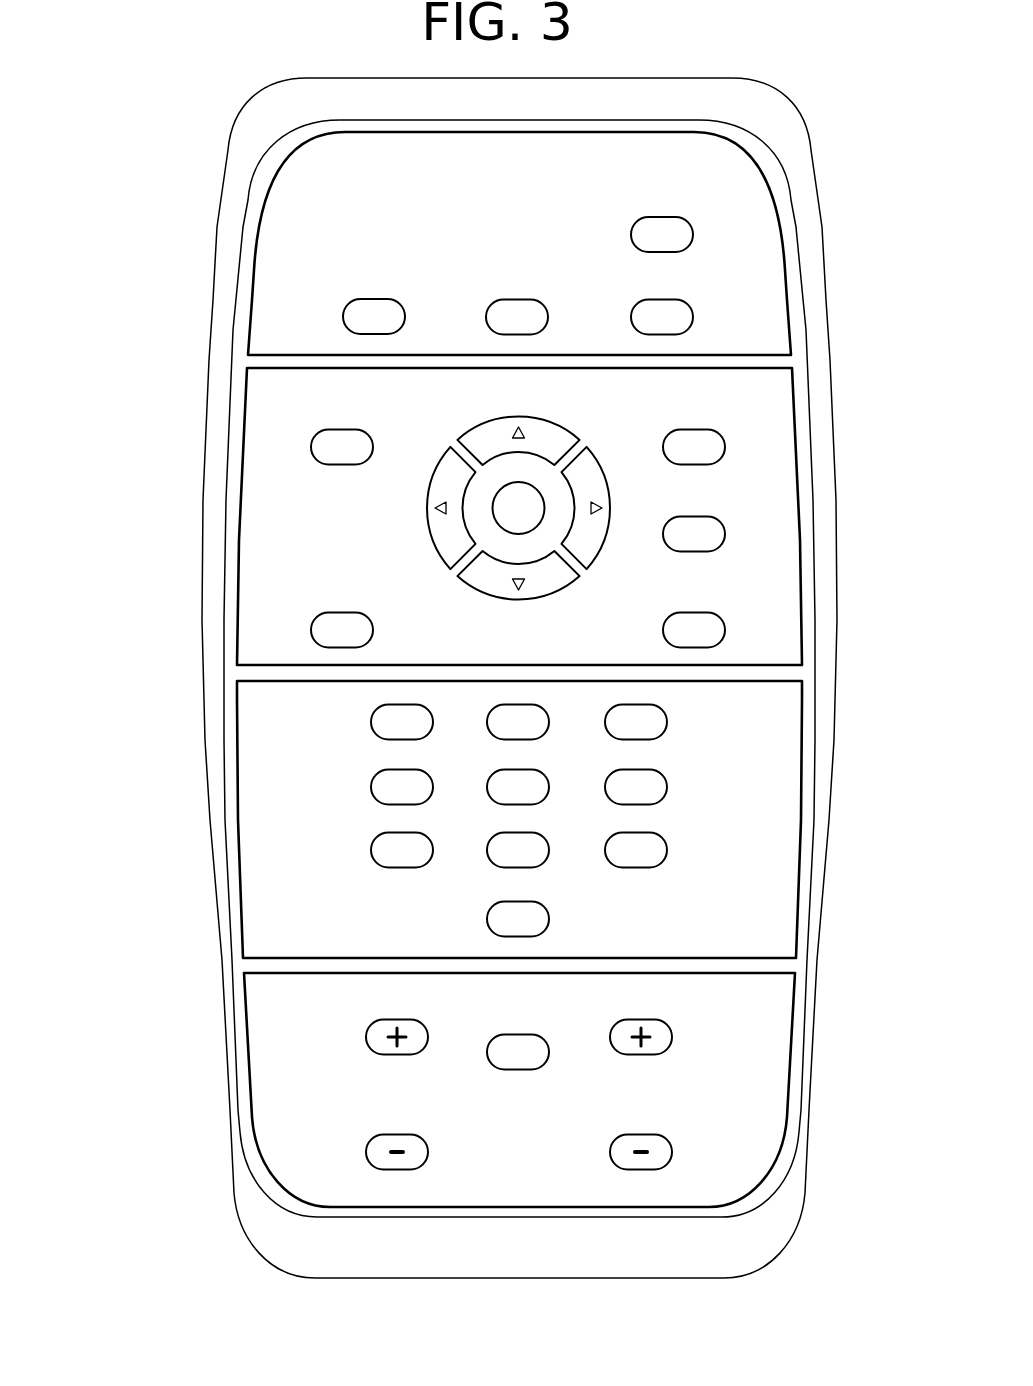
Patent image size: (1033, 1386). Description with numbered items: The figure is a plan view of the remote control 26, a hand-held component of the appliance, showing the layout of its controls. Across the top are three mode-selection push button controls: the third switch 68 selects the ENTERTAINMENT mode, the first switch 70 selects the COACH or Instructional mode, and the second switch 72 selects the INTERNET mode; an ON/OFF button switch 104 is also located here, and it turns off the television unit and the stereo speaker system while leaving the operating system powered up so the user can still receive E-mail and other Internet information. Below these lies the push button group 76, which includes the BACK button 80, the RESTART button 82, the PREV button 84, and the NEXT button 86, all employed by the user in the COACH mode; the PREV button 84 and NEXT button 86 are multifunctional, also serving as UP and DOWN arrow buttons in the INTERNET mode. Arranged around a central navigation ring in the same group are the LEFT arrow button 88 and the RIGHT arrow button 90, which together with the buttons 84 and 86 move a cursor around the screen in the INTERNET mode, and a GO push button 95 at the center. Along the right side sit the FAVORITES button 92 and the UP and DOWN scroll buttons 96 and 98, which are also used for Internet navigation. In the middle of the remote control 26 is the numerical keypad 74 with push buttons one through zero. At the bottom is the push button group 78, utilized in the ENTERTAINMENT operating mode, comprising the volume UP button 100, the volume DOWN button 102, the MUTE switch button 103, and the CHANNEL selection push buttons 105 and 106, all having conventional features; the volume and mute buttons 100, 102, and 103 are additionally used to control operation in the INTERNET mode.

The remote control 26 is at (152, 225).
The push button control (third switch) 68 is at (343, 307).
The push button control (first switch) 70 is at (632, 327).
The push button control (second switch) 72 is at (488, 326).
The numerical keypad 74 is at (273, 788).
The push button group 76 is at (273, 531).
The push button group 78 is at (305, 1082).
The BACK button 80 is at (312, 446).
The RESTART button 82 is at (373, 636).
The PREV button 84 is at (477, 426).
The NEXT button 86 is at (556, 596).
The LEFT arrow button 88 is at (428, 527).
The RIGHT arrow button 90 is at (590, 448).
The FAVORITES button 92 is at (725, 535).
The GO push button 95 is at (493, 498).
The UP scroll button 96 is at (725, 447).
The DOWN scroll button 98 is at (725, 630).
The volume UP button 100 is at (367, 1037).
The volume DOWN button 102 is at (367, 1152).
The MUTE switch button 103 is at (508, 1070).
The ON/OFF button switch 104 is at (632, 229).
The channel up button 105 is at (672, 1037).
The CHANNEL selection push button 106 is at (672, 1152).